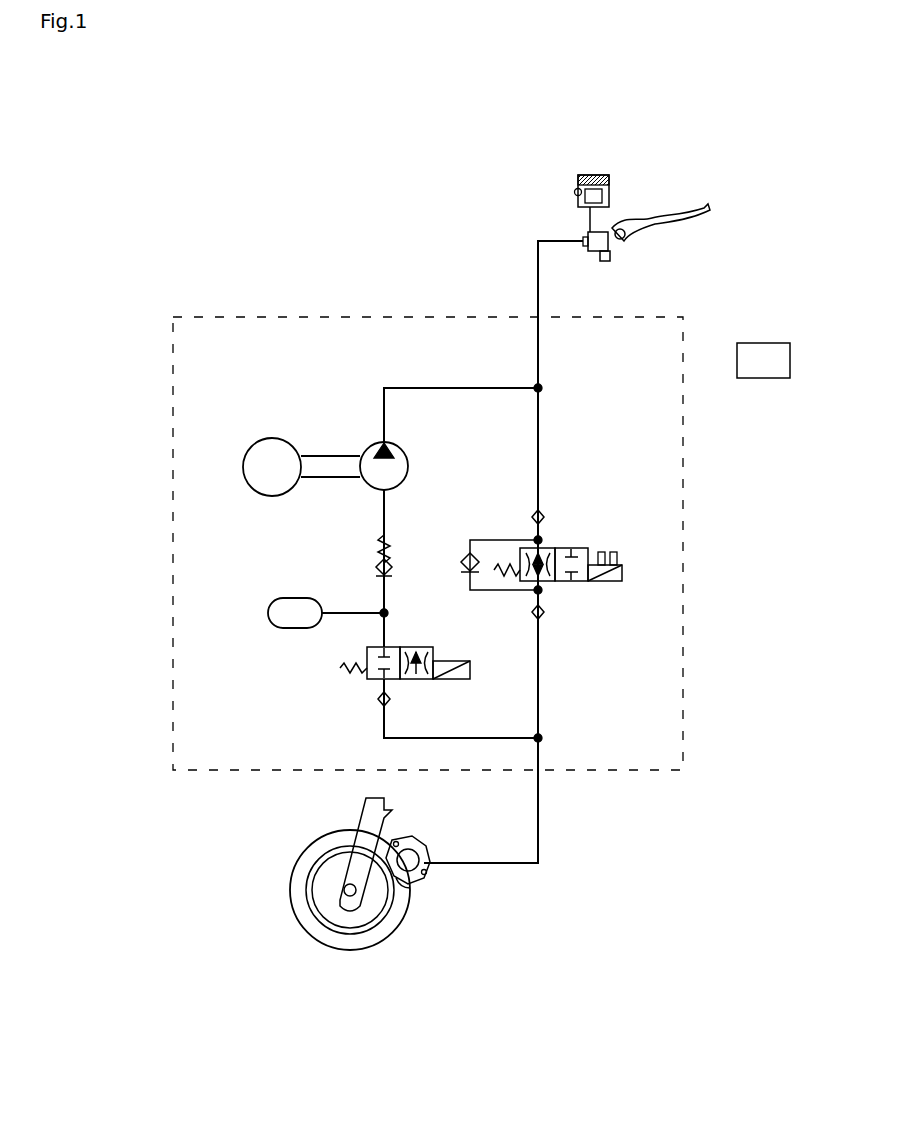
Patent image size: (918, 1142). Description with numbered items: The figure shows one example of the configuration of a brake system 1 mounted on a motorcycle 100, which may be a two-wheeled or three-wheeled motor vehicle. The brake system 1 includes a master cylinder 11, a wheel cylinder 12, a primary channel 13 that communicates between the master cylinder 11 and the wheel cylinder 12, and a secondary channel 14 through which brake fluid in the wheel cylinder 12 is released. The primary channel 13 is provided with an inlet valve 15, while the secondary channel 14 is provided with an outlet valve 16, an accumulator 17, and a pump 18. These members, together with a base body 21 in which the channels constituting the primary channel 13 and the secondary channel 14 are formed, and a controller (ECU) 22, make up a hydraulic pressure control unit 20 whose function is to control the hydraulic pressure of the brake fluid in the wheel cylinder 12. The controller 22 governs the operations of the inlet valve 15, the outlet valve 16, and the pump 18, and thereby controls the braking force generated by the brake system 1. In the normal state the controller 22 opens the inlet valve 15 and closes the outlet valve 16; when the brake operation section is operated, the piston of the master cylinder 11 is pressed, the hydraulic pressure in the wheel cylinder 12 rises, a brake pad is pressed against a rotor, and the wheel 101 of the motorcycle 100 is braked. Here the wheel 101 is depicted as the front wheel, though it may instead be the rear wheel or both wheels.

The motorcycle 100 is at (748, 122).
The brake system 1 is at (336, 196).
The master cylinder 11 is at (591, 252).
The wheel cylinder 12 is at (432, 877).
The primary channel 13 is at (541, 801).
The secondary channel 14 is at (432, 388).
The inlet valve 15 is at (580, 583).
The outlet valve 16 is at (426, 647).
The accumulator 17 is at (305, 598).
The pump 18 is at (366, 443).
The hydraulic pressure control unit 20 is at (274, 280).
The base body 21 is at (215, 316).
The controller (ECU) 22 is at (775, 343).
The wheel 101 is at (312, 925).